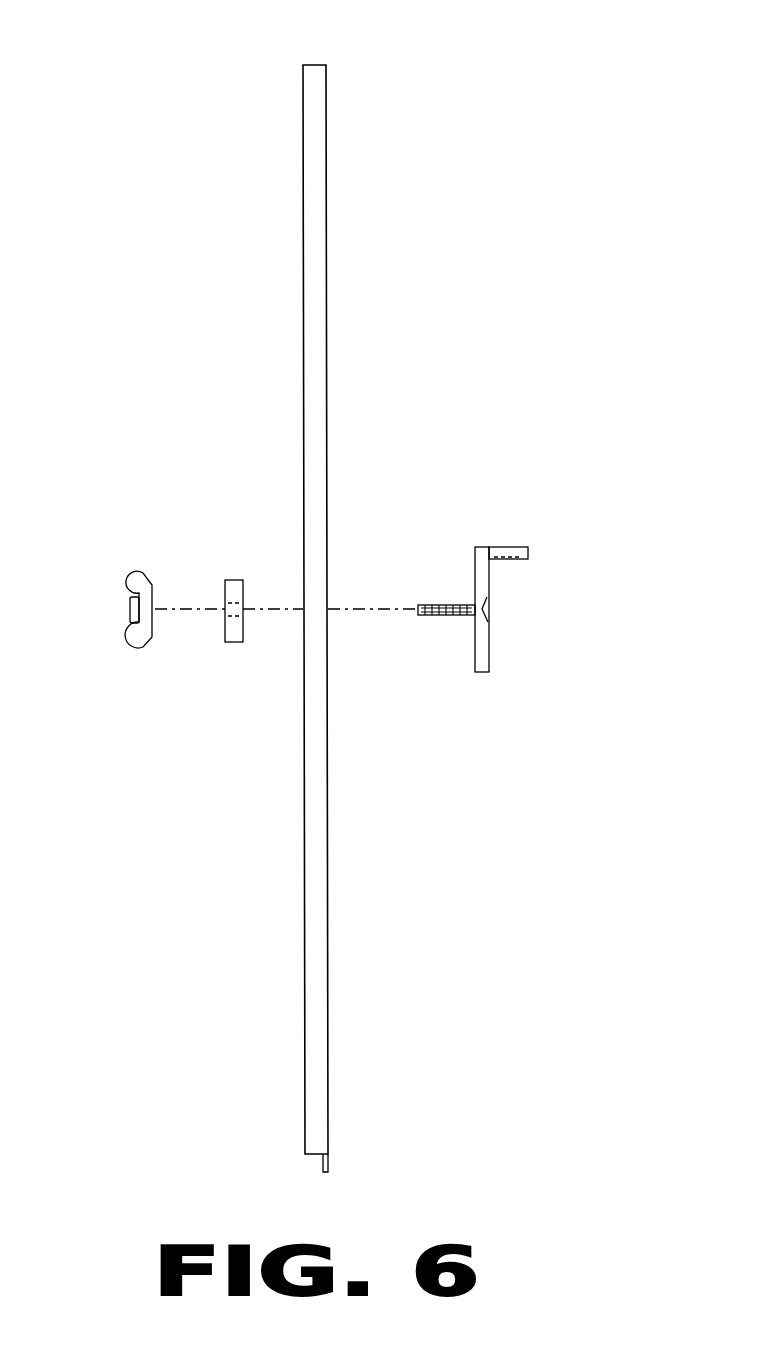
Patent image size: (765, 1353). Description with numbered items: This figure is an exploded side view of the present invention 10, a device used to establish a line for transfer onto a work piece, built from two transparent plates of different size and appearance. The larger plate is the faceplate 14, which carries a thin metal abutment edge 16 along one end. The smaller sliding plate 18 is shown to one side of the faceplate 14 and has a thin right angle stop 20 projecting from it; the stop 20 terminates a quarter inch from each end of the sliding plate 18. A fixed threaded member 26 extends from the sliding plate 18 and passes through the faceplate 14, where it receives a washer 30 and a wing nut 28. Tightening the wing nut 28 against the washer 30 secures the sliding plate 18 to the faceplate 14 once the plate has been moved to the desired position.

The present invention 10 is at (546, 112).
The post 14 is at (375, 609).
The thin metal abutment edge 16 is at (268, 1154).
The sliding plate 18 is at (491, 501).
The right angle stop 20 is at (565, 513).
The fixed threaded member 26 is at (476, 715).
The wing nut 28 is at (84, 682).
The washer 30 is at (183, 524).